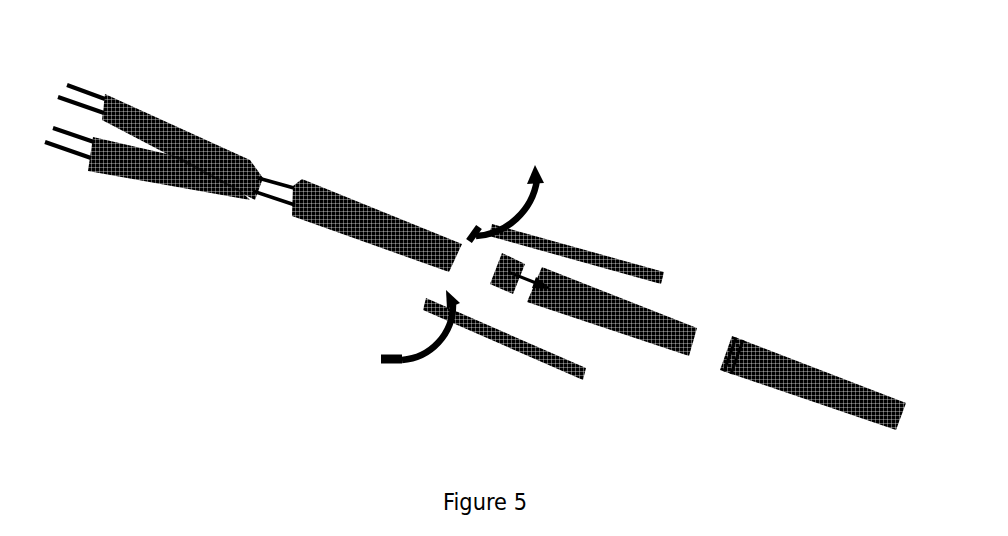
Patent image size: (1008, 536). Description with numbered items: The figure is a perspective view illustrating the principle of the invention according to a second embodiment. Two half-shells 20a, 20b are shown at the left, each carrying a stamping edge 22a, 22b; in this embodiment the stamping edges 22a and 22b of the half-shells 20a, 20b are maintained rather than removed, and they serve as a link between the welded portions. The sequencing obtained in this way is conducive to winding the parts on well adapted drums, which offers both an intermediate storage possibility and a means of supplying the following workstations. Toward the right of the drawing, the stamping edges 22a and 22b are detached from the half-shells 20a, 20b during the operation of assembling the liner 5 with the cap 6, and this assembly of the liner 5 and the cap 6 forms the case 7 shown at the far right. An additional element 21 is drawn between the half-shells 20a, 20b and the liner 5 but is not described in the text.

The half-shell 20a is at (140, 115).
The half-shell 20b is at (143, 177).
The cable boot 21 is at (358, 215).
The stamping edge 22a is at (565, 247).
The stamping edge 22b is at (440, 303).
The liner 5 is at (672, 313).
The cap 6 is at (512, 290).
The case 7 is at (828, 375).